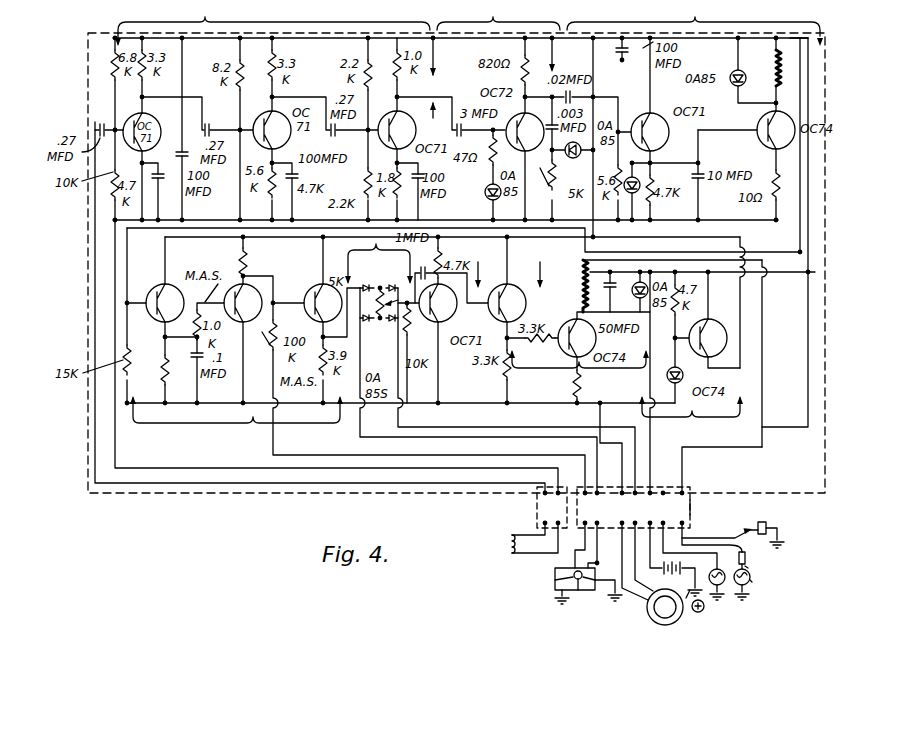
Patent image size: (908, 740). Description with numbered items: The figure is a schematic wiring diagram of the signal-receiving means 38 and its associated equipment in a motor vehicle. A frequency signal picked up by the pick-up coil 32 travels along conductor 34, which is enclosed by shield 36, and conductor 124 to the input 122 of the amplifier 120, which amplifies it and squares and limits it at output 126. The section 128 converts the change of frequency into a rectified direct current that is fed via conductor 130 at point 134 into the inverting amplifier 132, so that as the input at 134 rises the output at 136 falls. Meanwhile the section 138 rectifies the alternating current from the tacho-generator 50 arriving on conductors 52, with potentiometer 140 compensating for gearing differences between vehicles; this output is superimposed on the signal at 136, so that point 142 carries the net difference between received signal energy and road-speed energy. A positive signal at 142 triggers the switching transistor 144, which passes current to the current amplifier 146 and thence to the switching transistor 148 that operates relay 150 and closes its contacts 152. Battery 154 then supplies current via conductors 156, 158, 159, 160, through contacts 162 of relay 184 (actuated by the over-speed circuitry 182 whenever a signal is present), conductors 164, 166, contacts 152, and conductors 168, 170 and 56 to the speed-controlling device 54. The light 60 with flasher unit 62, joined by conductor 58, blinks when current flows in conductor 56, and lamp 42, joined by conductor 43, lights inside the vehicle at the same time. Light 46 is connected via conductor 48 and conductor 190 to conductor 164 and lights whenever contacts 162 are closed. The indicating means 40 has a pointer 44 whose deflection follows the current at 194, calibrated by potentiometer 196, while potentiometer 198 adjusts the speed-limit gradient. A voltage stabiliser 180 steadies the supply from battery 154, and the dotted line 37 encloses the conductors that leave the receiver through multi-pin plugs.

The amplifier 120 is at (272, 23).
The section 128 is at (498, 15).
The circuitry 182 is at (695, 23).
The input 122 is at (95, 118).
The conductor 124 is at (137, 482).
The output 126 is at (433, 86).
The conductor 130 is at (127, 238).
The inverting amplifier 132 is at (401, 424).
The input point 134 is at (120, 306).
The output point 136 is at (356, 330).
The rectifying section 138 is at (379, 264).
The potentiometer 140 is at (437, 282).
The net difference point 142 is at (412, 322).
The switching transistor 144 is at (449, 234).
The current amplifier 146 is at (515, 252).
The switching transistor 148 is at (579, 377).
The relay 150 is at (576, 283).
The contacts 152 is at (578, 266).
The battery 154 is at (721, 588).
The conductor 156 is at (646, 542).
The conductor 158 is at (654, 382).
The conductor 159 is at (815, 275).
The conductor 160 is at (808, 250).
The contacts 162 is at (806, 42).
The conductor 164 is at (812, 270).
The conductor 166 is at (760, 240).
The conductor 168 is at (742, 280).
The conductor 170 is at (758, 306).
The voltage stabiliser 180 is at (691, 344).
The relay 184 is at (790, 76).
The conductor 190 is at (778, 427).
The current point 194 is at (276, 300).
The potentiometer 196 is at (269, 333).
The potentiometer 198 is at (556, 195).
The pick-up coil 32 is at (513, 558).
The conductor 34 is at (552, 524).
The shield 36 is at (534, 512).
The dotted line 37 is at (690, 516).
The signal-receiving means 38 is at (167, 492).
The indicating means 40 is at (561, 595).
The lamp 42 is at (561, 580).
The conductor 43 is at (603, 538).
The pointer 44 is at (584, 594).
The light 46 is at (743, 588).
The conductor 48 is at (683, 560).
The tacho-generator 50 is at (628, 583).
The conductors 52 is at (514, 447).
The device 54 is at (768, 520).
The conductor 56 is at (731, 537).
The conductor 58 is at (746, 567).
The light 60 is at (750, 583).
The flasher unit 62 is at (746, 555).